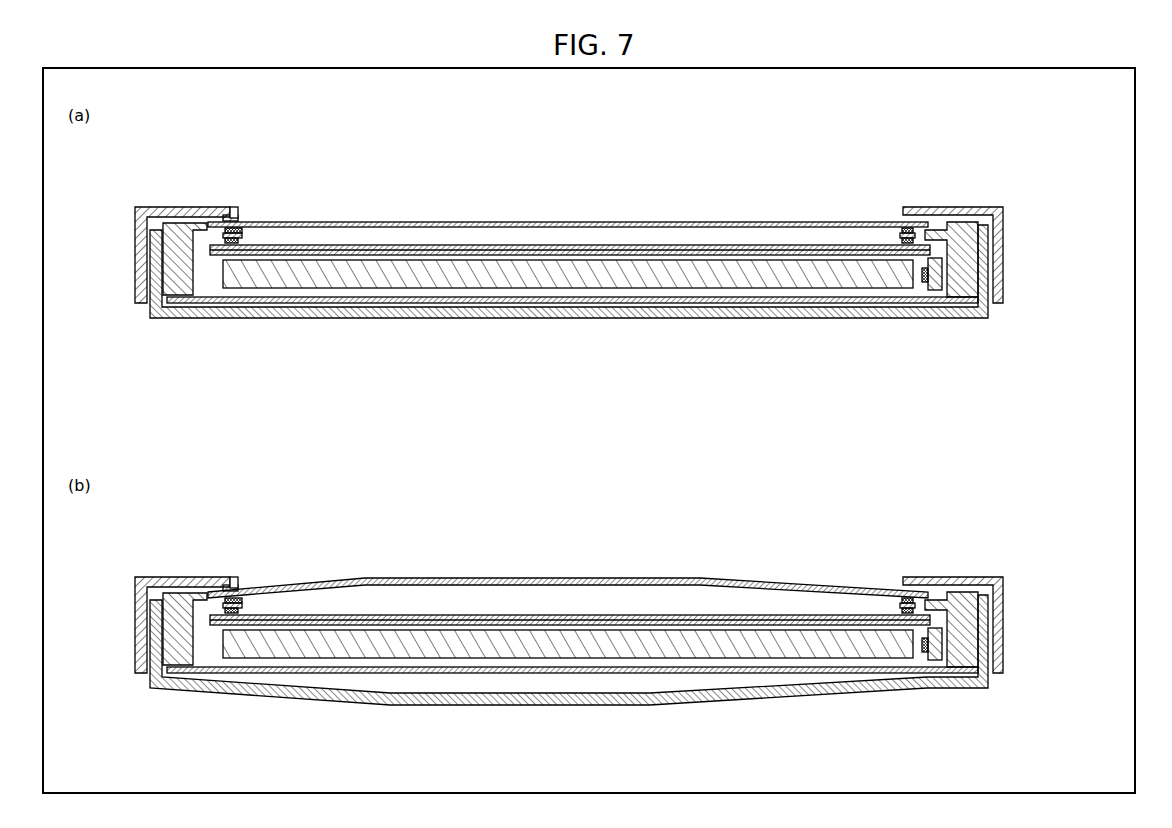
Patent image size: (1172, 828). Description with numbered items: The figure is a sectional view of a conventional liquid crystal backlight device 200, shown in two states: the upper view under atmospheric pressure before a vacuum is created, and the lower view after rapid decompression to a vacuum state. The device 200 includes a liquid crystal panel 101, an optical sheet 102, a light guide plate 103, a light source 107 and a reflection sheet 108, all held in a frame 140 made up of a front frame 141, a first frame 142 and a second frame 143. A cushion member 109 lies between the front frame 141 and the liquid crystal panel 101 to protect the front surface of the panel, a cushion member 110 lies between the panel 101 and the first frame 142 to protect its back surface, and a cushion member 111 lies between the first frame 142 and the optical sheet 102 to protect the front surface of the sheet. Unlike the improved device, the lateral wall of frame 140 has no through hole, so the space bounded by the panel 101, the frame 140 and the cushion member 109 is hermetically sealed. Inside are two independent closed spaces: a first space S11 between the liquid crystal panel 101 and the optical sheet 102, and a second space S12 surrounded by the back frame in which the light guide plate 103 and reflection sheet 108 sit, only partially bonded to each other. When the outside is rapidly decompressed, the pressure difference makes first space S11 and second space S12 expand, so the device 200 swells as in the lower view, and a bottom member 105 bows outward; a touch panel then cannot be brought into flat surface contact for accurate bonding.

The liquid crystal panel 101 is at (846, 224).
The optical sheet 102 is at (617, 250).
The light guide plate 103 is at (712, 270).
The bottom plate 105 is at (768, 318).
The light source 107 is at (925, 282).
The reflection sheet 108 is at (851, 300).
The cushion member 109 is at (230, 207).
The cushion member 110 is at (243, 228).
The cushion member 111 is at (243, 242).
The frame 140 is at (1067, 190).
The front frame 141 is at (1000, 215).
The first frame 142 is at (968, 253).
The second frame 143 is at (985, 313).
The first space S11 is at (534, 233).
The second space S12 is at (482, 290).
The conventional liquid crystal backlight device 200 is at (912, 142).